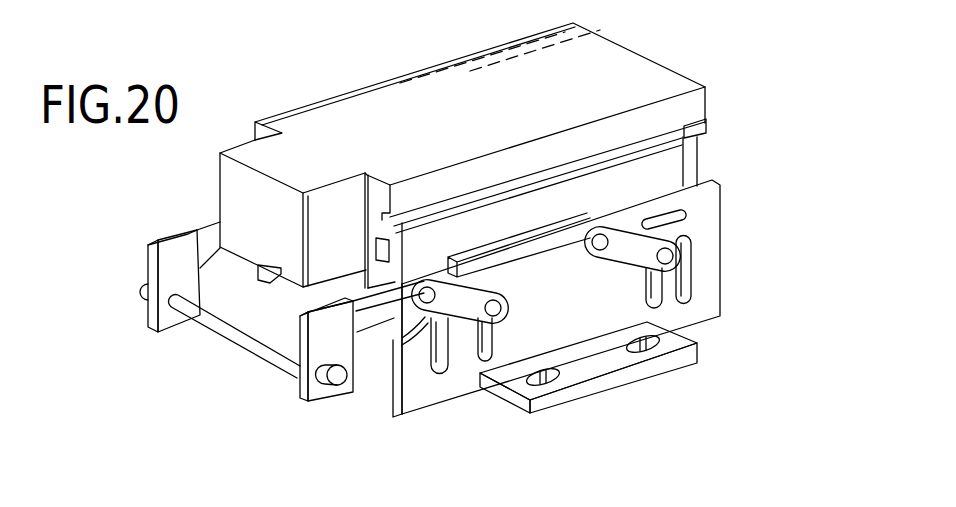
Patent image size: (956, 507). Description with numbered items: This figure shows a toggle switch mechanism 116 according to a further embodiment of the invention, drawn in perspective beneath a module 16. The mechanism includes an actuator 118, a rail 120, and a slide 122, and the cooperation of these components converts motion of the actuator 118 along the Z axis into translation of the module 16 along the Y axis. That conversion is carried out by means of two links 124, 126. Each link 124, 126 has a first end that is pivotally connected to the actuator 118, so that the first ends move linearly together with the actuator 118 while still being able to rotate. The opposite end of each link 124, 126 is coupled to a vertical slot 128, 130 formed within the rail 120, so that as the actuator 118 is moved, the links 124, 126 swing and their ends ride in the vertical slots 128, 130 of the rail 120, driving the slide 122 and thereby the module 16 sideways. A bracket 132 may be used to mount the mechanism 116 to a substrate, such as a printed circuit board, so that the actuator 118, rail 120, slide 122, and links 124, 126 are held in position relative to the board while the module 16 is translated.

The module 16 is at (627, 63).
The toggle switch mechanism 116 is at (737, 140).
The actuator 118 is at (302, 382).
The rail 120 is at (715, 300).
The slide 122 is at (608, 204).
The link 124 is at (513, 314).
The link 126 is at (620, 268).
The vertical slot 128 is at (507, 322).
The vertical slot 130 is at (664, 298).
The bracket 132 is at (690, 337).